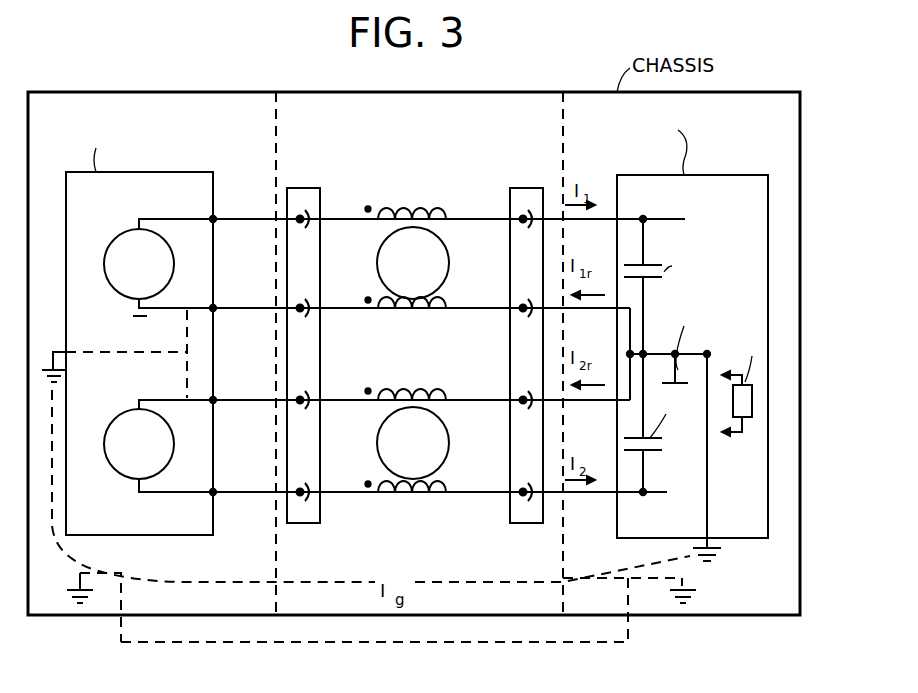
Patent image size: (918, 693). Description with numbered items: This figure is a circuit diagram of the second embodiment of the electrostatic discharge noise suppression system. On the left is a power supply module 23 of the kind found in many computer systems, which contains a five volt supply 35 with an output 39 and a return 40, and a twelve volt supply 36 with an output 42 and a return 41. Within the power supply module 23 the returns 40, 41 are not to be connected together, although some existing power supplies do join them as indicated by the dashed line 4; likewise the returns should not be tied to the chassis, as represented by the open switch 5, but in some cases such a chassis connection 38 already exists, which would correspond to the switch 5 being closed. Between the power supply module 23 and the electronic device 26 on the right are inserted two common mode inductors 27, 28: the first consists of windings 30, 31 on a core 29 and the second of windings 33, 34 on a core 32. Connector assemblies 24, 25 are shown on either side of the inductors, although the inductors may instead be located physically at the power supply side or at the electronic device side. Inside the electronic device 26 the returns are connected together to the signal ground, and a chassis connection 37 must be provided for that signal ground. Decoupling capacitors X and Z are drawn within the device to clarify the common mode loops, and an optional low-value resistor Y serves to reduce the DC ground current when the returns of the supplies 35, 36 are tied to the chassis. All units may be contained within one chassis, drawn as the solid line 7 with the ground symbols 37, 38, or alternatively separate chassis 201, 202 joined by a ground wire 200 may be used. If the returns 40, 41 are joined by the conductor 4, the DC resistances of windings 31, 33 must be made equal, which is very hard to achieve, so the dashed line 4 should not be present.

The chassis 7 is at (523, 91).
The power supply module 23 is at (175, 172).
The connector assembly 24 is at (297, 188).
The connector assembly 25 is at (520, 188).
The electronic device 26 is at (735, 175).
The common mode inductor 27 is at (424, 222).
The common mode inductor 28 is at (425, 462).
The core 29 is at (458, 252).
The winding 30 is at (440, 216).
The winding 31 is at (444, 306).
The core 32 is at (448, 438).
The winding 33 is at (442, 392).
The winding 34 is at (443, 490).
The +5 volt supply 35 is at (174, 262).
The +12 volt supply 36 is at (172, 422).
The chassis connection 37 is at (712, 554).
The chassis connection 38 is at (58, 350).
The output 39 is at (236, 218).
The return 40 is at (228, 308).
The return 41 is at (236, 399).
The output 42 is at (440, 471).
The dashed line 4 is at (190, 352).
The open switch 5 is at (102, 352).
The ground wire 200 is at (407, 645).
The separate chassis 201 is at (684, 606).
The separate chassis 202 is at (160, 616).